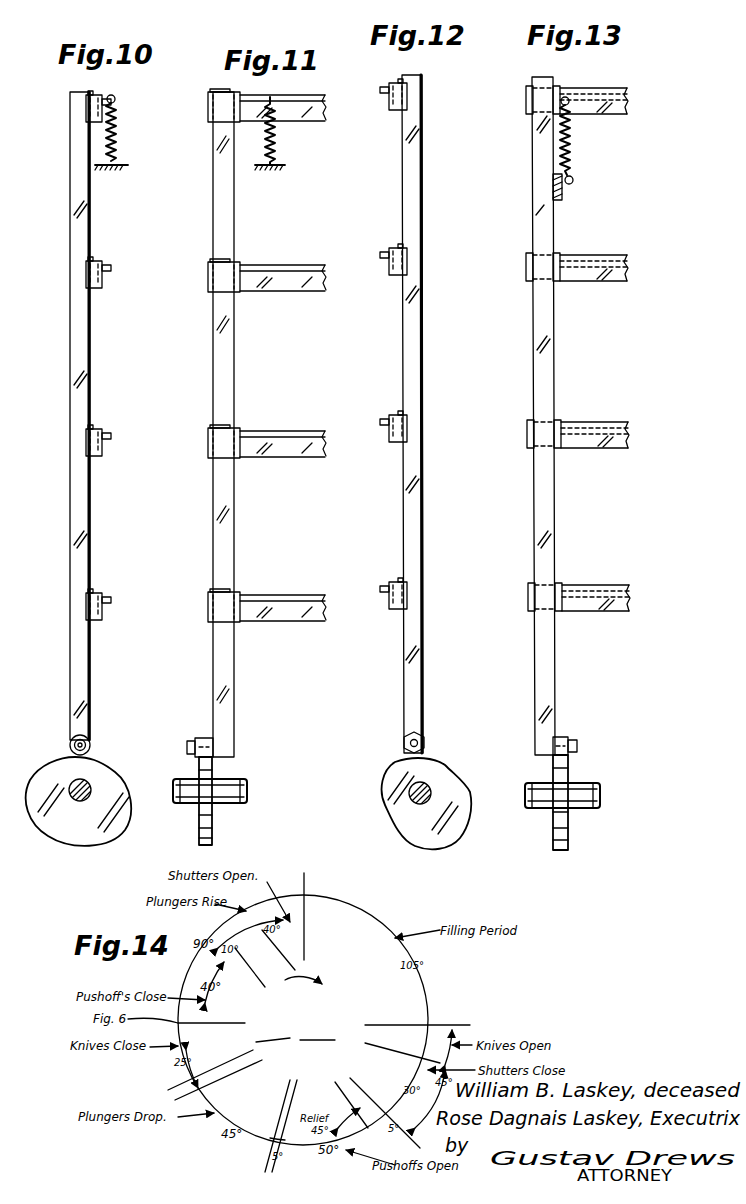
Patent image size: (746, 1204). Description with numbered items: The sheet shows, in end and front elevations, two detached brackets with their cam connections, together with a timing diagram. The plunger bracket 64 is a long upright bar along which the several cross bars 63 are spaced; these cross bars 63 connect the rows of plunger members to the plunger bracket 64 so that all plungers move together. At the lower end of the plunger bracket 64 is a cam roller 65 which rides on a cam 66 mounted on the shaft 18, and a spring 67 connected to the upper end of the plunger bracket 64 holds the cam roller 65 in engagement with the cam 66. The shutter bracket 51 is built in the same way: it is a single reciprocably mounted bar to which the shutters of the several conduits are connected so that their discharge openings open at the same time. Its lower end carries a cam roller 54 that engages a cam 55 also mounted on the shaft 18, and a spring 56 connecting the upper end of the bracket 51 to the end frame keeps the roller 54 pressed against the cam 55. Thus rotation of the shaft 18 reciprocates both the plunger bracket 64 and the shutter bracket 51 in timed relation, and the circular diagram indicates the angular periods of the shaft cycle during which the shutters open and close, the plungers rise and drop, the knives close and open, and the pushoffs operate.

In FIG. 10, the shaft 18 is at (70, 800).
In FIG. 11, the shaft 18 is at (248, 788).
In FIG. 12, the shaft 18 is at (408, 804).
In FIG. 13, the shaft 18 is at (580, 808).
In FIG. 12, the bracket 51 is at (405, 313).
In FIG. 13, the bracket 51 is at (554, 343).
In FIG. 12, the cam roller 54 is at (406, 733).
In FIG. 13, the cam roller 54 is at (565, 737).
In FIG. 12, the cam 55 is at (393, 770).
In FIG. 13, the cam 55 is at (570, 770).
In FIG. 13, the spring 56 is at (573, 150).
In FIG. 10, the cross bar 63 is at (105, 272).
In FIG. 11, the cross bar 63 is at (277, 277).
In FIG. 10, the plunger bracket 64 is at (72, 217).
In FIG. 11, the plunger bracket 64 is at (235, 226).
In FIG. 10, the cam roller 65 is at (92, 744).
In FIG. 11, the cam roller 65 is at (205, 738).
In FIG. 10, the cam 66 is at (45, 770).
In FIG. 11, the cam 66 is at (213, 826).
In FIG. 10, the spring 67 is at (116, 130).
In FIG. 11, the spring 67 is at (276, 140).